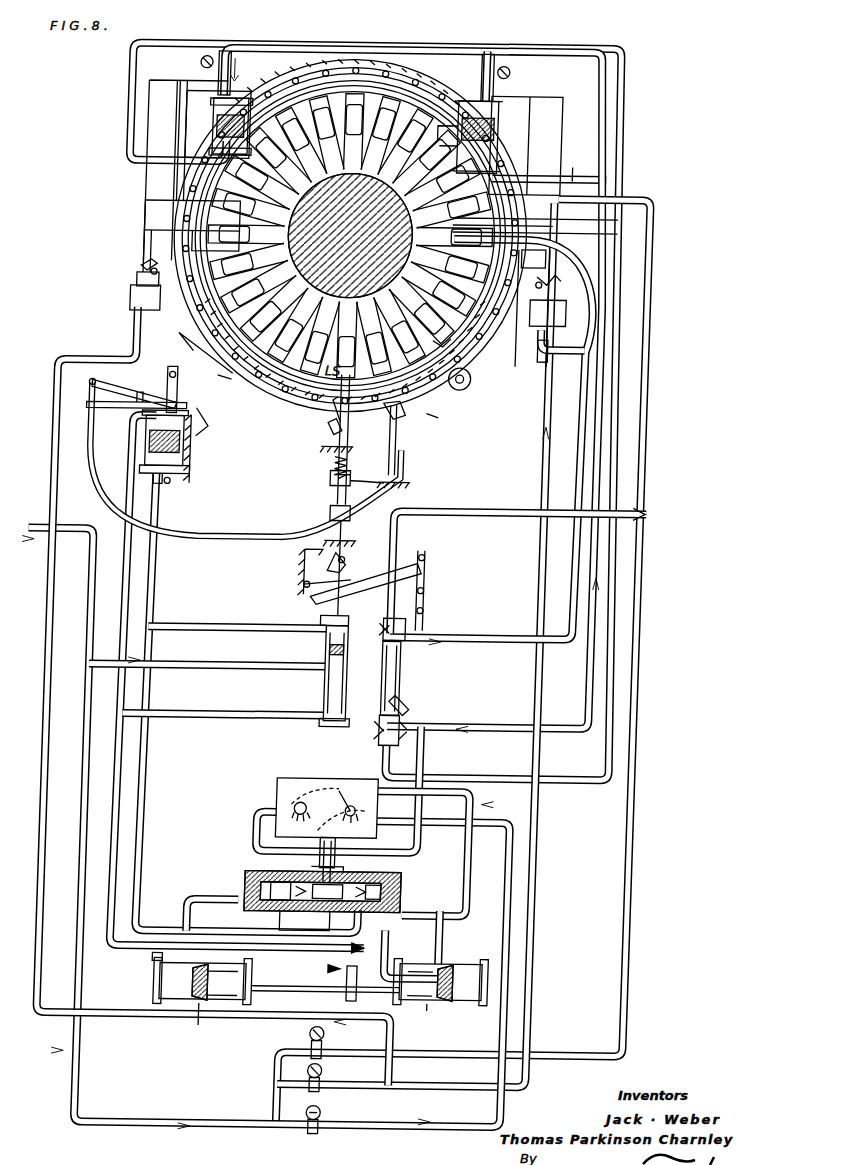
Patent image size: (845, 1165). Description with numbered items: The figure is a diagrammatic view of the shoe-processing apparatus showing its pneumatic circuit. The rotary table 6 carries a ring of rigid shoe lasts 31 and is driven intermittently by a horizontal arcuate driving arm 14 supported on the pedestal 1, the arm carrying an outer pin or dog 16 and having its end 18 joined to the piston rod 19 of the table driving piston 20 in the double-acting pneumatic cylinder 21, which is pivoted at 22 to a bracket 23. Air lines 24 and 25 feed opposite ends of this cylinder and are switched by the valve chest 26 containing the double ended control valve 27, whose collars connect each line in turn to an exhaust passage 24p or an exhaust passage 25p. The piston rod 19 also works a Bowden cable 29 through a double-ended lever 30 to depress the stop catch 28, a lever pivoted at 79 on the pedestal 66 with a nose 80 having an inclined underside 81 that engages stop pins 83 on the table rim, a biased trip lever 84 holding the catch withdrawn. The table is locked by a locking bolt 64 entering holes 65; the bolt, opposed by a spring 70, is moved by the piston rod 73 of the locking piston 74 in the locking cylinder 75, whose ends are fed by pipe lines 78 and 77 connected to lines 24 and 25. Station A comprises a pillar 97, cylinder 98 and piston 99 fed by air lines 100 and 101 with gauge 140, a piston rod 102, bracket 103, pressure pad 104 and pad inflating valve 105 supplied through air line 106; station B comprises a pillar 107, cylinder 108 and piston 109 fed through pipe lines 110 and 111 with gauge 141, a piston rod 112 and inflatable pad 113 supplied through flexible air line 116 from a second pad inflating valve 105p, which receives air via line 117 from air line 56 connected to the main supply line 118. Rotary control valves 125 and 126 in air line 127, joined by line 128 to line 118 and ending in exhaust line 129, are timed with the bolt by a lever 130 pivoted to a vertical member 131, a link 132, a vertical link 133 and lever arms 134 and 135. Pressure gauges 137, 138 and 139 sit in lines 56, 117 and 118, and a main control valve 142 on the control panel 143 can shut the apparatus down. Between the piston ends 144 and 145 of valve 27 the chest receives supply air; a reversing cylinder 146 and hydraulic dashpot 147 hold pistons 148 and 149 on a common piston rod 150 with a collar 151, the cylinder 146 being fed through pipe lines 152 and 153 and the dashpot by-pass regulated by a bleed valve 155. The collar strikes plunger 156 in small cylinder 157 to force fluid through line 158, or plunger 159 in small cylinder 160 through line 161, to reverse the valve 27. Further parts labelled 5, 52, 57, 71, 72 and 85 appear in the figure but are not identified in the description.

The pedestal 1 is at (214, 436).
The upper limit switch 5 is at (462, 338).
The rotary table 6 is at (190, 288).
The driving arm 14 is at (252, 392).
The pin or dog 16 is at (483, 376).
The end of driving arm 18 is at (205, 348).
The piston rod 19 is at (180, 372).
The table driving piston 20 is at (192, 471).
The pneumatic cylinder 21 is at (198, 448).
The pivot 22 is at (180, 486).
The bracket 23 is at (208, 466).
The air line 24 is at (171, 549).
The exhaust passage 24p is at (215, 885).
The air line 25 is at (145, 567).
The exhaust passage 25p is at (355, 932).
The valve chest 26 is at (280, 868).
The control valve 27 is at (300, 862).
The stop catch 28 is at (415, 412).
The flexible control 29 is at (105, 470).
The double-ended lever 30 is at (112, 380).
The shoe lasts 31 is at (310, 92).
The stop 52 is at (532, 308).
The air line 56 is at (658, 190).
The switch 57 is at (548, 300).
The locking bolt 64 is at (352, 466).
The holes 65 is at (248, 370).
The pedestal 66 is at (320, 553).
The spring 70 is at (364, 458).
The slider 71 is at (366, 476).
The slider 72 is at (367, 510).
The piston rod 73 is at (340, 616).
The locking piston 74 is at (347, 652).
The locking cylinder 75 is at (347, 691).
The pipe line 77 is at (192, 713).
The pipe line 78 is at (190, 626).
The pivot 79 is at (455, 404).
The nose 80 is at (404, 424).
The underside 81 is at (352, 448).
The stop pins 83 is at (278, 390).
The trip lever 84 is at (305, 398).
The pivot 85 is at (344, 424).
The pillar 97 is at (165, 128).
The pneumatic cylinder 98 is at (218, 128).
The piston 99 is at (224, 140).
The air line 100 is at (134, 62).
The air line 101 is at (238, 32).
The piston rod 102 is at (200, 163).
The bracket 103 is at (165, 215).
The pressure pad 104 is at (146, 278).
The pad inflating valve 105 is at (150, 268).
The pad inflating valve 105p is at (549, 345).
The air line 106 is at (70, 600).
The pillar 107 is at (545, 145).
The cylinder 108 is at (482, 125).
The piston 109 is at (490, 142).
The pipe line 110 is at (500, 86).
The pipe line 111 is at (578, 166).
The piston rod 112 is at (552, 216).
The pressure pad or cushion 113 is at (551, 229).
The flexible air line 116 is at (596, 312).
The air supply line 117 is at (561, 897).
The main compressed air supply line 118 is at (50, 538).
The rotary control valve 125 is at (468, 630).
The rotary control valve 126 is at (416, 736).
The air line 127 is at (422, 664).
The line 128 is at (195, 664).
The exhaust line 129 is at (663, 510).
The lever 130 is at (362, 578).
The vertical member 131 is at (325, 590).
The link 132 is at (450, 566).
The vertical link 133 is at (450, 584).
The lever arm 134 is at (450, 604).
The lever arm 135 is at (428, 704).
The pressure gauge 137 is at (344, 1026).
The pressure gauge 138 is at (278, 1075).
The pressure gauge 139 is at (277, 1112).
The gauge 140 is at (206, 63).
The gauge 141 is at (512, 68).
The main control valve 142 is at (386, 812).
The control panel 143 is at (340, 774).
The piston end 144 is at (300, 884).
The piston end 145 is at (412, 884).
The reversing cylinder 146 is at (193, 1021).
The dashpot cylinder 147 is at (428, 1016).
The piston 148 is at (192, 985).
The piston 149 is at (514, 983).
The common piston rod 150 is at (290, 982).
The collar 151 is at (390, 998).
The pipe line 152 is at (262, 940).
The pipe line 153 is at (135, 964).
The bleed valve 155 is at (320, 800).
The plunger 156 is at (412, 965).
The small cylinder 157 is at (470, 955).
The line 158 is at (499, 905).
The plunger 159 is at (319, 968).
The small cylinder 160 is at (337, 938).
The line 161 is at (233, 900).